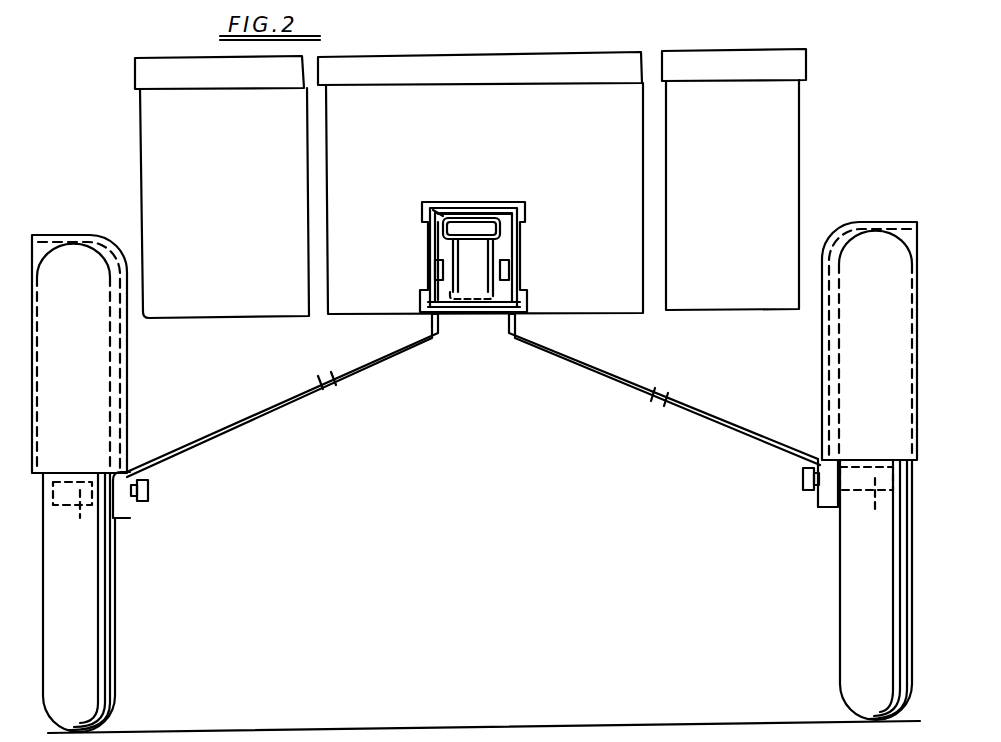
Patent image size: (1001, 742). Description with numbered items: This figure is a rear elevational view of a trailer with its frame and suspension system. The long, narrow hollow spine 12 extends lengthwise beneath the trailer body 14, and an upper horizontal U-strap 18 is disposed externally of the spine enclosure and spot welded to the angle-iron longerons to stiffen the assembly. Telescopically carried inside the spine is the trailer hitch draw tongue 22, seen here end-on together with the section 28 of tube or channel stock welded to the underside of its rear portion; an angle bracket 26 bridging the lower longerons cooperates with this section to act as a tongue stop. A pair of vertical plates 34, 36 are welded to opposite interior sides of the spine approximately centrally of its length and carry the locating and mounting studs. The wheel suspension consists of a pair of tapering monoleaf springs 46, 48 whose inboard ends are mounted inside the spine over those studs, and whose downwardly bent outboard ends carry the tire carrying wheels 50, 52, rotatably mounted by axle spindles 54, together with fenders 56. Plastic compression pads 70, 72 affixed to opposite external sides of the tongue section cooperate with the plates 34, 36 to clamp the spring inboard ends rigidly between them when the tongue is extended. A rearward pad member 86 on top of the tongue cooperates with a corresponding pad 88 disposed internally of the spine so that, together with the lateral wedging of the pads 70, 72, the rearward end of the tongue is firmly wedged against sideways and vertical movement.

The hollow spine 12 is at (560, 182).
The trailer body 14 is at (592, 53).
The upper horizontal U-strap 18 is at (470, 318).
The trailer hitch draw tongue 22 is at (433, 207).
The angle bracket 26 is at (508, 310).
The tongue projection section 28 is at (493, 254).
The vertical plate 34 is at (518, 240).
The vertical plate 36 is at (428, 272).
The monoleaf spring 46 is at (298, 403).
The monoleaf spring 48 is at (622, 386).
The tire carrying wheel 50 is at (92, 700).
The tire carrying wheel 52 is at (853, 628).
The axle spindle 54 is at (472, 511).
The fender 56 is at (85, 235).
The compression pad 70 is at (443, 251).
The compression pad 72 is at (499, 283).
The rearward pad member 86 is at (483, 217).
The internal spine pad 88 is at (458, 211).